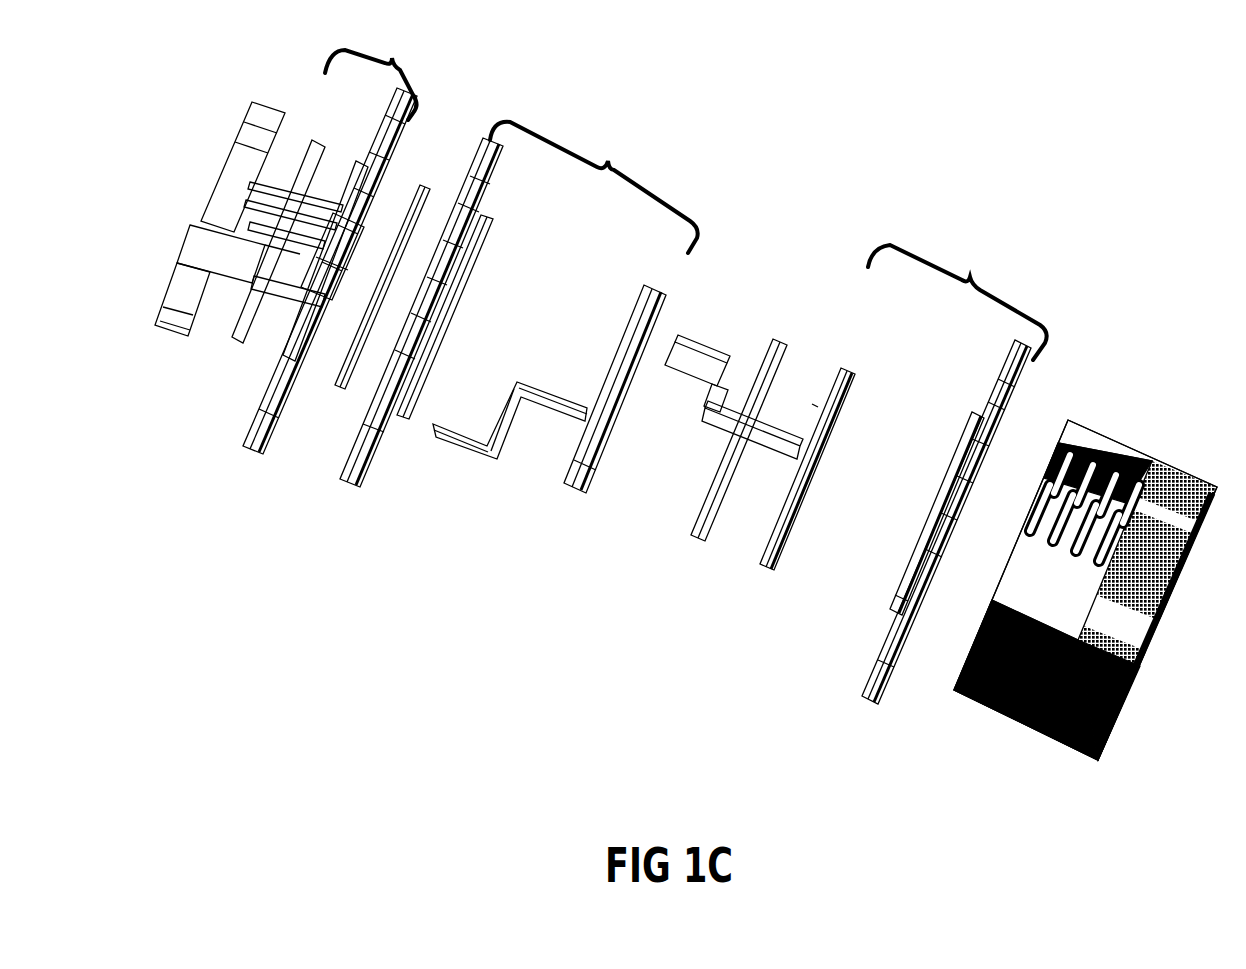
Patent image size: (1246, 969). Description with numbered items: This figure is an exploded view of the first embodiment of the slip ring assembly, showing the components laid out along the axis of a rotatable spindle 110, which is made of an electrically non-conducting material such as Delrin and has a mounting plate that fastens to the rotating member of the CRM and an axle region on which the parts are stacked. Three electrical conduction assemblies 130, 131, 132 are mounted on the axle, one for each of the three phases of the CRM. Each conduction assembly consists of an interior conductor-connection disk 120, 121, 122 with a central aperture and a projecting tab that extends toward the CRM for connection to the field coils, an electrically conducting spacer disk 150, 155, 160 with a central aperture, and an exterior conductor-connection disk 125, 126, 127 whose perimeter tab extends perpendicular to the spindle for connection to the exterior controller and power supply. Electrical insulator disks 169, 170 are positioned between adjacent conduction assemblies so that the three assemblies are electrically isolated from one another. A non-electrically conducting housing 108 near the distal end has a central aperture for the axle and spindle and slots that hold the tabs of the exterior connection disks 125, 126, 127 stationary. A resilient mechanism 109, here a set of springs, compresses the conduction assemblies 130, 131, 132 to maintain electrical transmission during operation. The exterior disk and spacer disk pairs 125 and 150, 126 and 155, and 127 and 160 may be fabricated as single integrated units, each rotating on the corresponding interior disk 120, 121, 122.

The housing 108 is at (982, 658).
The resilient mechanism 109 is at (1053, 463).
The rotatable spindle 110 is at (248, 133).
The interior conductor-connection disk 120 is at (219, 252).
The interior conductor-connection disk 121 is at (577, 443).
The interior conductor-connection disk 122 is at (852, 368).
The exterior conductor-connection disk 125 is at (255, 442).
The exterior conductor-connection disk 126 is at (350, 485).
The exterior conductor-connection disk 127 is at (867, 684).
The electrical conduction assembly 130 is at (375, 79).
The electrical conduction assembly 131 is at (594, 187).
The electrical conduction assembly 132 is at (957, 302).
The electrically conducting spacer disk 150 is at (278, 339).
The electrically conducting spacer disk 155 is at (483, 222).
The electrically conducting spacer disk 160 is at (897, 592).
The electrical insulator disk 169 is at (423, 178).
The electrical insulator disk 170 is at (763, 357).